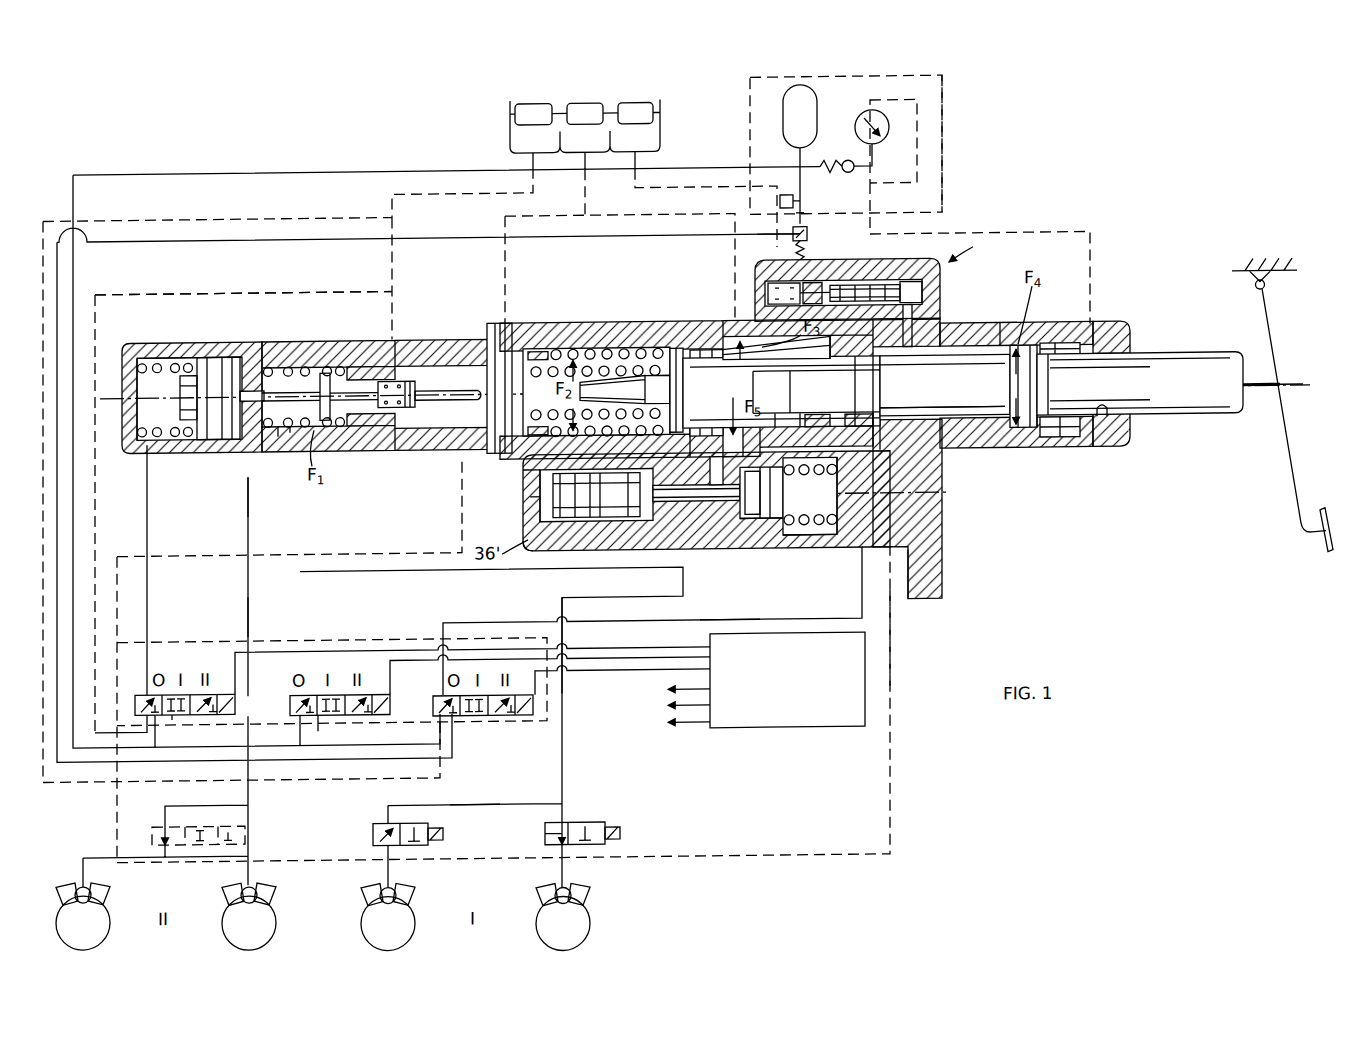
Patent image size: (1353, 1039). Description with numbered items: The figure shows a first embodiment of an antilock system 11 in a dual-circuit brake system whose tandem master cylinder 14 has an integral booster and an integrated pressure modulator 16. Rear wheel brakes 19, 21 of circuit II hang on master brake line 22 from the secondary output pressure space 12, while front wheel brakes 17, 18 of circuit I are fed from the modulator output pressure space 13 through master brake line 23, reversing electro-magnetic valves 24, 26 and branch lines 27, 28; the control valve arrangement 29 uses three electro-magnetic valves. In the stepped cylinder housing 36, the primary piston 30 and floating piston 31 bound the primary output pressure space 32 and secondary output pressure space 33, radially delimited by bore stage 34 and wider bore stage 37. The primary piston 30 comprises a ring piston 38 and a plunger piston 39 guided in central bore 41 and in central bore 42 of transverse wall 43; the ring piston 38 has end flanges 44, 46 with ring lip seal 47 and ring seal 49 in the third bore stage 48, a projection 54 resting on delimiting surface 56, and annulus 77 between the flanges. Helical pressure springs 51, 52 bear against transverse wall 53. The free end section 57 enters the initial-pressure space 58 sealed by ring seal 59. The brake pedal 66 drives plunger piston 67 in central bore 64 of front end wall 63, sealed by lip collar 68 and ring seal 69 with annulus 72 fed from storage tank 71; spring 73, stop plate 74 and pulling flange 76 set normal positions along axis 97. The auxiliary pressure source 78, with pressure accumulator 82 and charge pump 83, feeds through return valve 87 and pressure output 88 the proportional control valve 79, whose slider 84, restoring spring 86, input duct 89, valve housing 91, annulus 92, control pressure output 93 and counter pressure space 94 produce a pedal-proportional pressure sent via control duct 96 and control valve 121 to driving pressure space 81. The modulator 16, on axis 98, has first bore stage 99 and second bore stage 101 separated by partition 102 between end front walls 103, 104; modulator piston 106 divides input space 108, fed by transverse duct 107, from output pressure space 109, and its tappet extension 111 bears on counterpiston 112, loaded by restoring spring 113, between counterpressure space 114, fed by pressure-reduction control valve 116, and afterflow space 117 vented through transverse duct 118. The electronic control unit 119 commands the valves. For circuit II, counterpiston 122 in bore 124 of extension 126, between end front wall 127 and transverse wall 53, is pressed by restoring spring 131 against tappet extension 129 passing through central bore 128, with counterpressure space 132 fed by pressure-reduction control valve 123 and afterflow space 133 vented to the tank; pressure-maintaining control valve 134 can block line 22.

The antilock system 11 is at (891, 673).
The output pressure space 12 is at (378, 388).
The output pressure space 13 is at (748, 530).
The tandem master cylinder 14 is at (645, 328).
The pressure modulator 16 is at (519, 528).
The front wheel brake 17 is at (407, 899).
The front wheel brake 18 is at (541, 898).
The rear wheel brake 19 is at (106, 896).
The rear wheel brake 21 is at (226, 895).
The master brake line 22 is at (247, 626).
The master brake line 23 is at (600, 605).
The reversing electro-magnetic valve 24 is at (428, 839).
The reversing electro-magnetic valve 26 is at (598, 830).
The branch line 27 is at (488, 810).
The branch line 28 is at (545, 836).
The control valve arrangement 29 is at (173, 655).
The primary piston 30 is at (706, 347).
The floating piston 31 is at (425, 396).
The primary output pressure space 32 is at (580, 356).
The secondary output pressure space 33 is at (300, 372).
The bore stage 34 is at (325, 377).
The cylinder housing 36 is at (456, 358).
The bore stage 37 is at (608, 356).
The ring piston 38 is at (796, 436).
The plunger piston 39 is at (1000, 459).
The central bore 41 is at (828, 380).
The central bore 42 is at (990, 418).
The transverse wall 43 is at (875, 440).
The end flange 44 is at (700, 357).
The end flange 46 is at (860, 380).
The ring lip seal 47 is at (781, 392).
The third bore stage 48 is at (726, 357).
The ring seal 49 is at (822, 436).
The helical pressure spring 51 is at (552, 357).
The helical pressure spring 52 is at (272, 372).
The transverse wall 53 is at (250, 346).
The projection 54 is at (890, 380).
The ring-shaped delimiting surface 56 is at (850, 438).
The free end section 57 is at (948, 345).
The initial-pressure space 58 is at (990, 345).
The ring seal 59 is at (1008, 389).
The front end wall 63 is at (1125, 352).
The central bore 64 is at (1090, 459).
The brake pedal 66 is at (1296, 447).
The plunger piston 67 is at (1180, 427).
The lip collar 68 is at (1060, 459).
The ring seal 69 is at (1110, 425).
The brake fluid storage tank 71 is at (602, 111).
The annulus 72 is at (1075, 356).
The helical pressure spring 73 is at (1030, 459).
The stop plate 74 is at (1030, 360).
The pulling flange 76 is at (682, 414).
The annulus 77 is at (760, 330).
The auxiliary pressure source 78 is at (942, 113).
The proportional control valve 79 is at (973, 249).
The driving pressure space 81 is at (880, 450).
The pressure accumulator 82 is at (784, 116).
The accumulator charge pump 83 is at (859, 127).
The slider 84 is at (866, 295).
The restoring spring 86 is at (785, 292).
The return valve 87 is at (808, 236).
The pressure output 88 is at (795, 211).
The input duct 89 is at (808, 246).
The valve housing 91 is at (912, 275).
The annulus 92 is at (850, 360).
The control pressure output 93 is at (823, 292).
The counter pressure space 94 is at (745, 356).
The control duct 96 is at (700, 629).
The central longitudinal axis 97 is at (1182, 400).
The central longitudinal axis 98 is at (942, 531).
The first bore stage 99 is at (580, 526).
The second bore stage 101 is at (810, 580).
The partition 102 is at (705, 580).
The end front wall 103 is at (525, 505).
The right end front wall 104 is at (942, 566).
The modulator piston 106 is at (607, 528).
The transverse duct 107 is at (525, 478).
The input space 108 is at (545, 533).
The output pressure space 109 is at (670, 510).
The tappet-shaped extension 111 is at (760, 530).
The counterpiston 112 is at (776, 493).
The restoring spring 113 is at (812, 546).
The counterpressure space 114 is at (810, 510).
The pressure-reduction control valve 116 is at (318, 727).
The afterflow space 117 is at (775, 528).
The transverse duct 118 is at (716, 466).
The electronic control unit 119 is at (763, 737).
The control valve 121 is at (487, 723).
The counterpiston 122 is at (200, 443).
The pressure-reduction control valve 123 is at (176, 720).
The bore 124 is at (175, 360).
The extension 126 is at (143, 345).
The end front wall 127 is at (112, 366).
The central bore 128 is at (278, 434).
The tappet-shaped extension 129 is at (290, 432).
The restoring spring 131 is at (147, 447).
The counterpressure space 132 is at (142, 443).
The afterflow space 133 is at (248, 480).
The pressure-maintaining control valve 134 is at (231, 833).